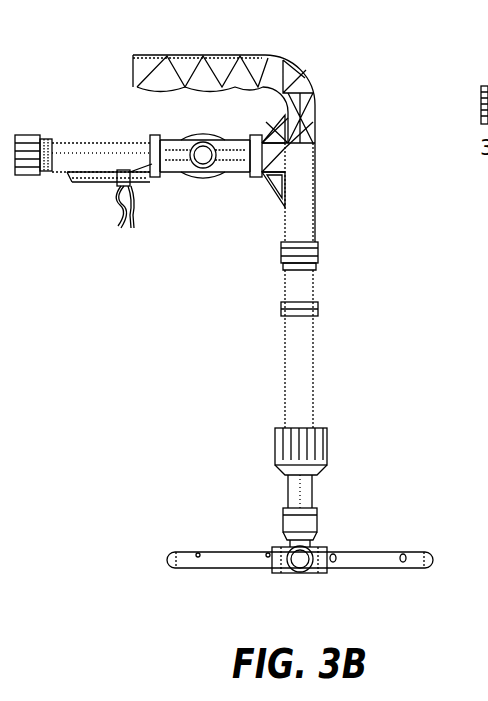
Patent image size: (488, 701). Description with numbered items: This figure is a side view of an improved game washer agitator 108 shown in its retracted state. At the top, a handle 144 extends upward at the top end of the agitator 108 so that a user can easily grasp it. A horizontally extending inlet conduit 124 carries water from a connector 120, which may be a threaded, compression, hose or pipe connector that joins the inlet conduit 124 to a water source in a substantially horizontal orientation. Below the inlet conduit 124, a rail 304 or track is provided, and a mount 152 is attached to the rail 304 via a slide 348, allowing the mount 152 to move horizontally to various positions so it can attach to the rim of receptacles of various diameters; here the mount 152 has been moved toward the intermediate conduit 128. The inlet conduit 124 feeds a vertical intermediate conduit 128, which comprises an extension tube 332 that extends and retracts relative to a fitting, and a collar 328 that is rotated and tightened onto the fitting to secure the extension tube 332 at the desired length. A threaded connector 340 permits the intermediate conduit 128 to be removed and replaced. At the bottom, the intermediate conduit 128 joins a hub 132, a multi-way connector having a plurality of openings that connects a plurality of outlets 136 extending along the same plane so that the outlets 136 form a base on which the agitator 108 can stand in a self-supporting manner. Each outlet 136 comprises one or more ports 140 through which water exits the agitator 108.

The agitator 108 is at (378, 270).
The connector 120 is at (26, 135).
The inlet conduit 124 is at (314, 222).
The intermediate conduit 128 is at (254, 352).
The hub 132 is at (320, 573).
The outlet 136 is at (210, 570).
The port 140 is at (431, 523).
The handle 144 is at (222, 50).
The mount 152 is at (131, 212).
The rail 304 is at (83, 181).
The collar 328 is at (323, 428).
The extension tube 332 is at (288, 497).
The threaded connector 340 is at (316, 518).
The slide 348 is at (123, 168).